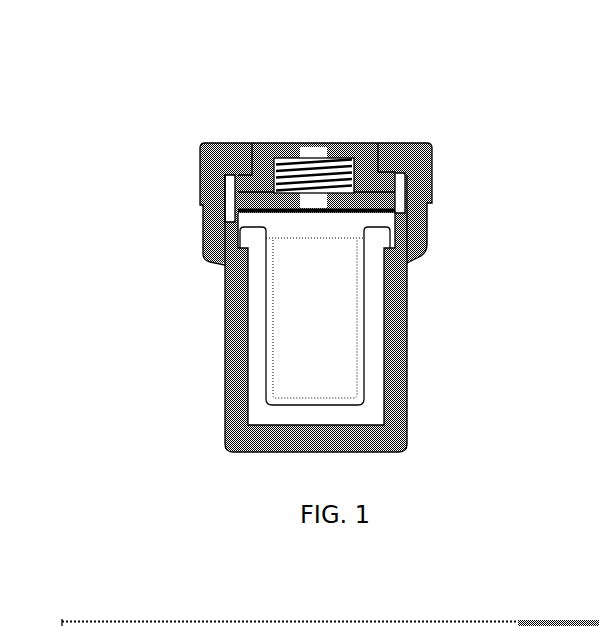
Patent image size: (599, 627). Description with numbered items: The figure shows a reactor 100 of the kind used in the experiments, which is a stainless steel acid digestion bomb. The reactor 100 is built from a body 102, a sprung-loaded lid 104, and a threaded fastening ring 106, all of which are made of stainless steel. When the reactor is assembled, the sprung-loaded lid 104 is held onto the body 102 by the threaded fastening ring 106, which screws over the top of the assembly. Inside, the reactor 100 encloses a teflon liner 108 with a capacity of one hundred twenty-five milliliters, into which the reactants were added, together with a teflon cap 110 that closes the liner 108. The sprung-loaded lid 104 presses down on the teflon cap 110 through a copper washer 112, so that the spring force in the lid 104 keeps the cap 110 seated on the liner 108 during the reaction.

The reactor 100 is at (286, 233).
The body 102 is at (403, 408).
The sprung-loaded lid 104 is at (366, 148).
The threaded fastening ring 106 is at (429, 168).
The teflon liner 108 is at (372, 288).
The teflon cap 110 is at (385, 228).
The copper washer 112 is at (380, 219).